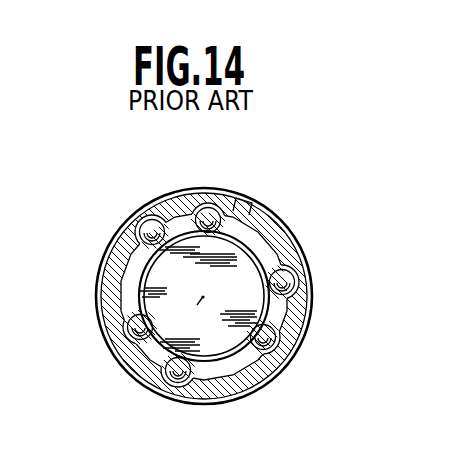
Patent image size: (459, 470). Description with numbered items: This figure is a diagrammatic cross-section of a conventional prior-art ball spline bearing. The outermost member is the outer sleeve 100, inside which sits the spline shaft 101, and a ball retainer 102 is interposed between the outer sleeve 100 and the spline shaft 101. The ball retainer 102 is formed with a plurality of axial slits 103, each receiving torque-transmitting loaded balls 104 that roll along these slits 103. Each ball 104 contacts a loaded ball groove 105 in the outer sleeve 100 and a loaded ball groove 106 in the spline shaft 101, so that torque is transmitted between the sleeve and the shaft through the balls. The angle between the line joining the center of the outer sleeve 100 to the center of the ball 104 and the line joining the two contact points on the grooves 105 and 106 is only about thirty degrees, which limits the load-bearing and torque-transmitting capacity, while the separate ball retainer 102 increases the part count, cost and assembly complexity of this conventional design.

The outer sleeve 100 is at (270, 228).
The spline shaft 101 is at (223, 332).
The ball retainer 102 is at (277, 322).
The axial slits 103 is at (202, 212).
The torque-transmitting loaded balls 104 is at (205, 234).
The loaded ball groove 105 is at (216, 214).
The loaded ball groove 106 is at (222, 217).